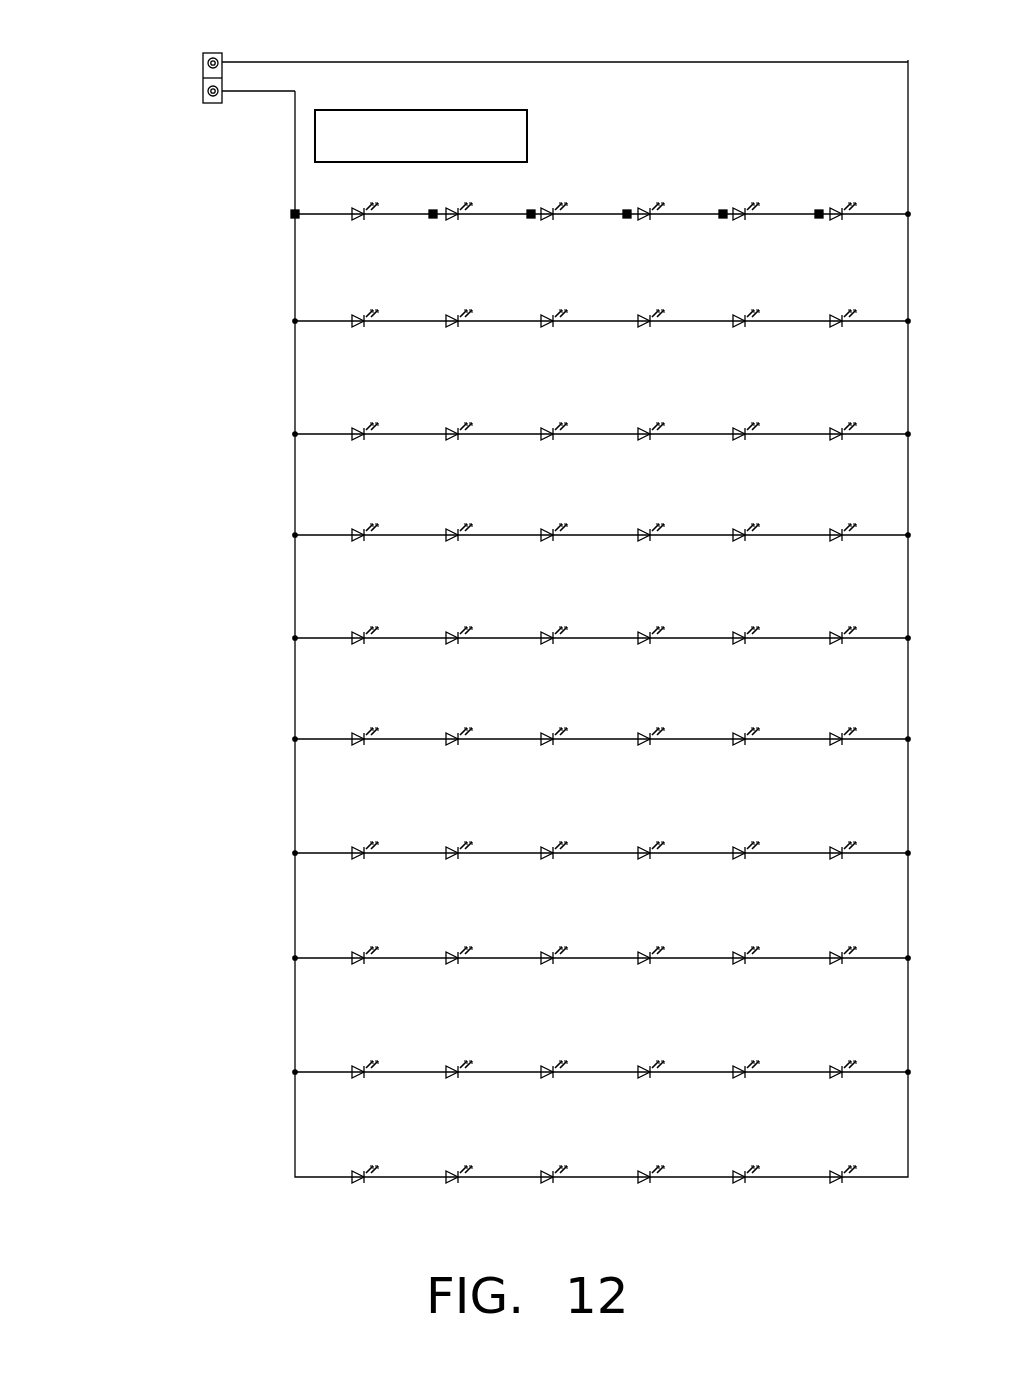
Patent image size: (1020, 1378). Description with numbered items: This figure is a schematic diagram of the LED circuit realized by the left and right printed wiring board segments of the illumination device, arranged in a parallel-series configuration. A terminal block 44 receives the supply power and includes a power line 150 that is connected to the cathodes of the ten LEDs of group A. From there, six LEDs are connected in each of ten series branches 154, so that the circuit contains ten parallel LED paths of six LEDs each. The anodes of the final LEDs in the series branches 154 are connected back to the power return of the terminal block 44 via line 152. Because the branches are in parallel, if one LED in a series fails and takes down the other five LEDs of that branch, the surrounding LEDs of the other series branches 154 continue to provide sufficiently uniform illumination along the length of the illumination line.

The terminal block 44 is at (203, 104).
The power line 150 is at (558, 621).
The line 152 is at (714, 60).
The series branches 154 is at (680, 213).